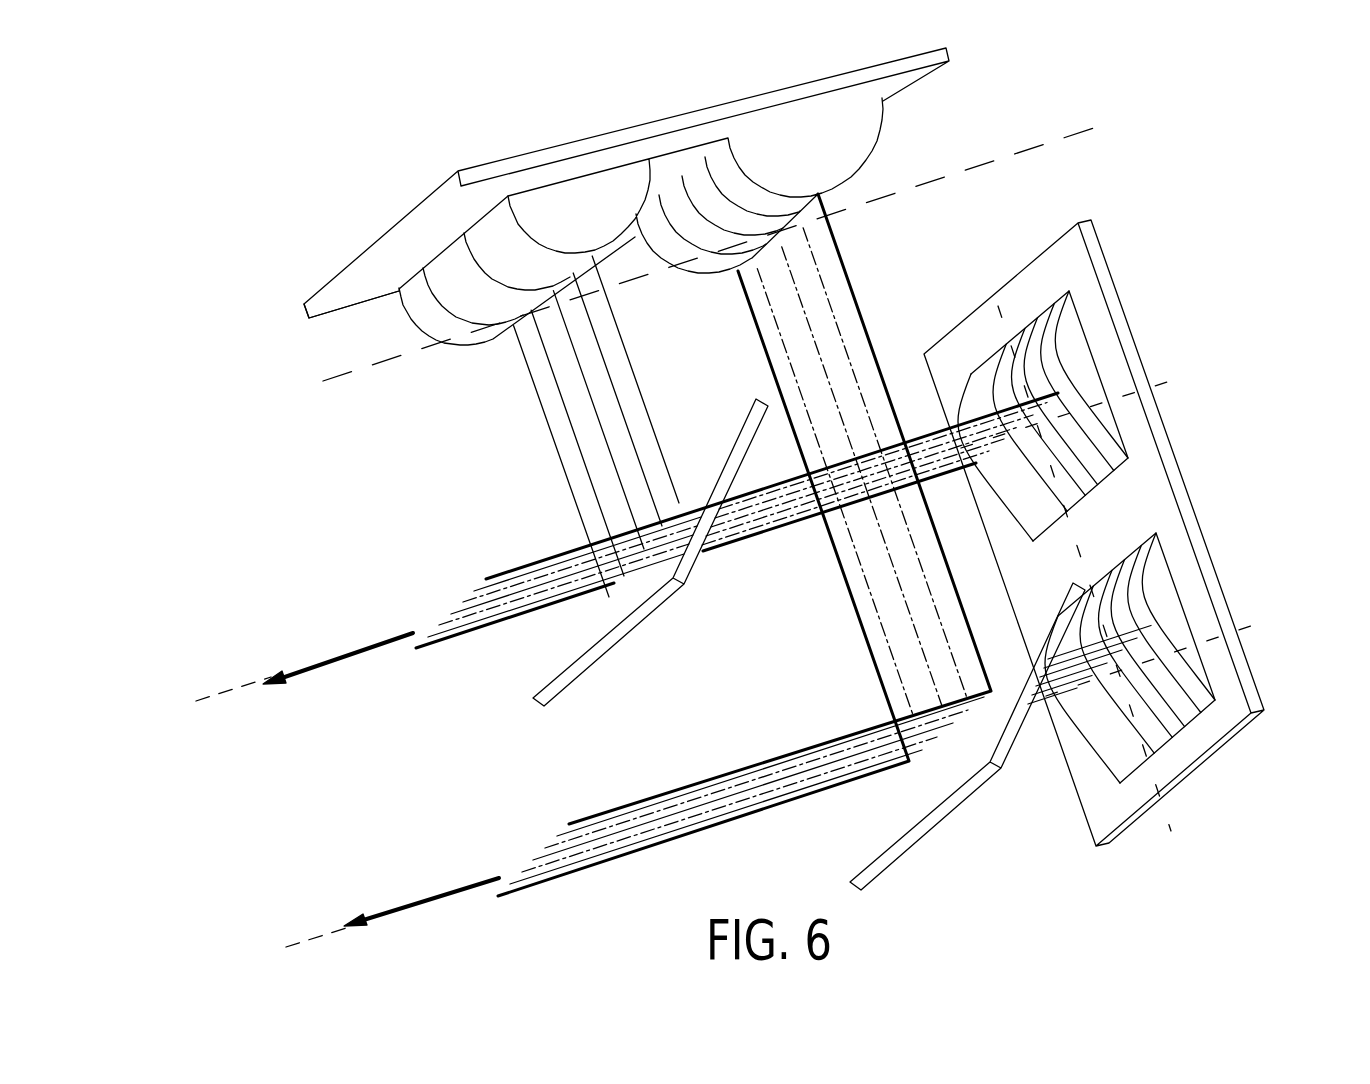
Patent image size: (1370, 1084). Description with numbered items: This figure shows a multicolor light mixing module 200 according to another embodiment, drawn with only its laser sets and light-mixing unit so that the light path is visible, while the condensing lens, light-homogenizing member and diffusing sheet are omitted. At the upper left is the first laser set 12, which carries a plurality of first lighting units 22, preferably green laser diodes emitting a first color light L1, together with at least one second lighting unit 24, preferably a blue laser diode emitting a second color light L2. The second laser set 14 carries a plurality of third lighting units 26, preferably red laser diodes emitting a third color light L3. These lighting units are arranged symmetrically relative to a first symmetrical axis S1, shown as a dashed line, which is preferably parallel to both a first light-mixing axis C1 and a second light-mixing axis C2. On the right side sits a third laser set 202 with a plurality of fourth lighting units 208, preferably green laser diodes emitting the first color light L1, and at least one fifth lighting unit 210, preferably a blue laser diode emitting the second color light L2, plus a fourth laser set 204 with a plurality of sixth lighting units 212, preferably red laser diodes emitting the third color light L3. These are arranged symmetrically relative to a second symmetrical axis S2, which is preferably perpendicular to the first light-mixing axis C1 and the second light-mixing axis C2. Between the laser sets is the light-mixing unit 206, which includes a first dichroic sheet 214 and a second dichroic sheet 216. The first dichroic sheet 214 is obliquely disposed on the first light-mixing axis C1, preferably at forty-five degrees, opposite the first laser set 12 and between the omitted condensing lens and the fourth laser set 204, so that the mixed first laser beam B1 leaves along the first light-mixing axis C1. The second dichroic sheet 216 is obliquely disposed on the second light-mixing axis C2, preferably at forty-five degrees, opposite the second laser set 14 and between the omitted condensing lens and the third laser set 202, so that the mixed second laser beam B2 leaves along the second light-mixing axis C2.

The first laser set 12 is at (763, 122).
The second laser set 14 is at (452, 230).
The first lighting unit 22 is at (660, 190).
The second lighting unit 24 is at (627, 203).
The third lighting unit 26 is at (417, 242).
The multicolor light mixing module 200 is at (1213, 160).
The third laser set 202 is at (1106, 391).
The fourth laser set 204 is at (1178, 657).
The light-mixing unit 206 is at (997, 818).
The fourth lighting unit 208 is at (1087, 495).
The fifth lighting unit 210 is at (1048, 363).
The sixth lighting unit 212 is at (1170, 677).
The first dichroic sheet 214 is at (933, 813).
The second dichroic sheet 216 is at (650, 607).
The first color light L1 is at (828, 293).
The second color light L2 is at (762, 360).
The third color light L3 is at (630, 347).
The first symmetrical axis S1 is at (695, 264).
The second symmetrical axis S2 is at (997, 305).
The first laser beam B1 is at (370, 912).
The second laser beam B2 is at (285, 672).
The first light-mixing axis C1 is at (287, 948).
The second light-mixing axis C2 is at (207, 702).